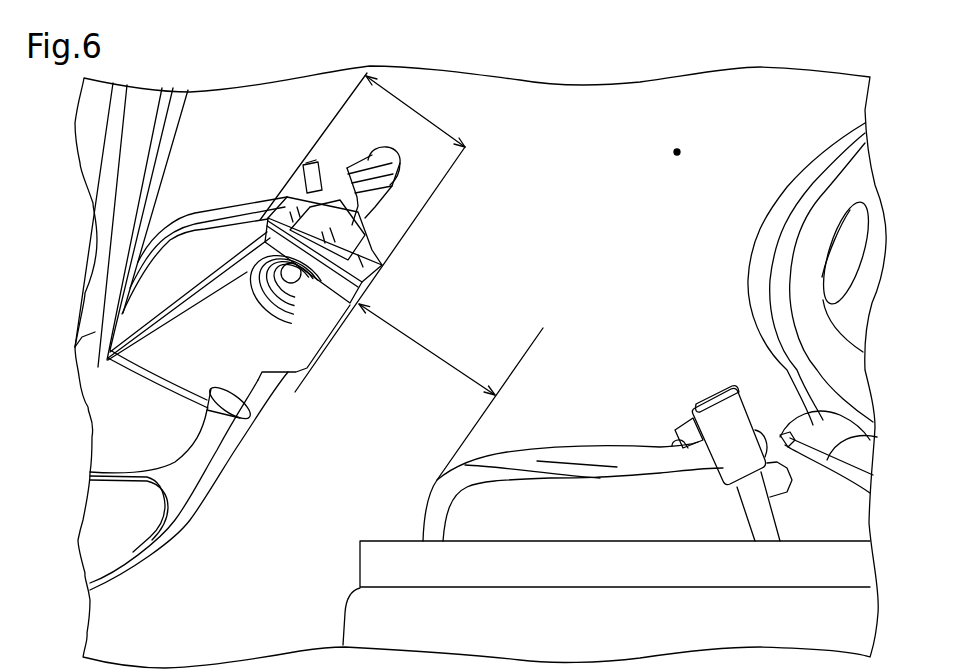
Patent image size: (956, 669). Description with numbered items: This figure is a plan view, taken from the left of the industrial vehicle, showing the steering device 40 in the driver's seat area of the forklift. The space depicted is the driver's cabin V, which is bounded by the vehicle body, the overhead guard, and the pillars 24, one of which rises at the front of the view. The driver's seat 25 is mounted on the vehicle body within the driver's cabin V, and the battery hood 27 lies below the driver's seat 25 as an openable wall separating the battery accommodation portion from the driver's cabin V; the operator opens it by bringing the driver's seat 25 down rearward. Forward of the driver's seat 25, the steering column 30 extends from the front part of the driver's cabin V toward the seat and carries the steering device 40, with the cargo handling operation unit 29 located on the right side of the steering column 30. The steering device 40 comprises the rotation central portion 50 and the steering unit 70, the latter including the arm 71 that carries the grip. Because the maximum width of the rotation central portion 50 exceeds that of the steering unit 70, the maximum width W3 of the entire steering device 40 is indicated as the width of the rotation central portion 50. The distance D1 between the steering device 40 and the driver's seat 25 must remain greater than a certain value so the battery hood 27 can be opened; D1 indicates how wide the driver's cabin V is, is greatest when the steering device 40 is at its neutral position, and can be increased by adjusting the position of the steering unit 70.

The pillars 24 is at (128, 146).
The driver's seat 25 is at (840, 193).
The battery hood 27 is at (682, 587).
The cargo handling operation unit 29 is at (349, 160).
The steering column 30 is at (272, 337).
The steering device 40 is at (343, 202).
The rotation central portion 50 is at (378, 283).
The steering unit 70 is at (262, 240).
The arm 71 is at (340, 282).
The maximum width of the entire steering device W3 is at (418, 107).
The distance between the steering device and the driver's seat D1 is at (430, 347).
The driver's cabin V is at (677, 152).